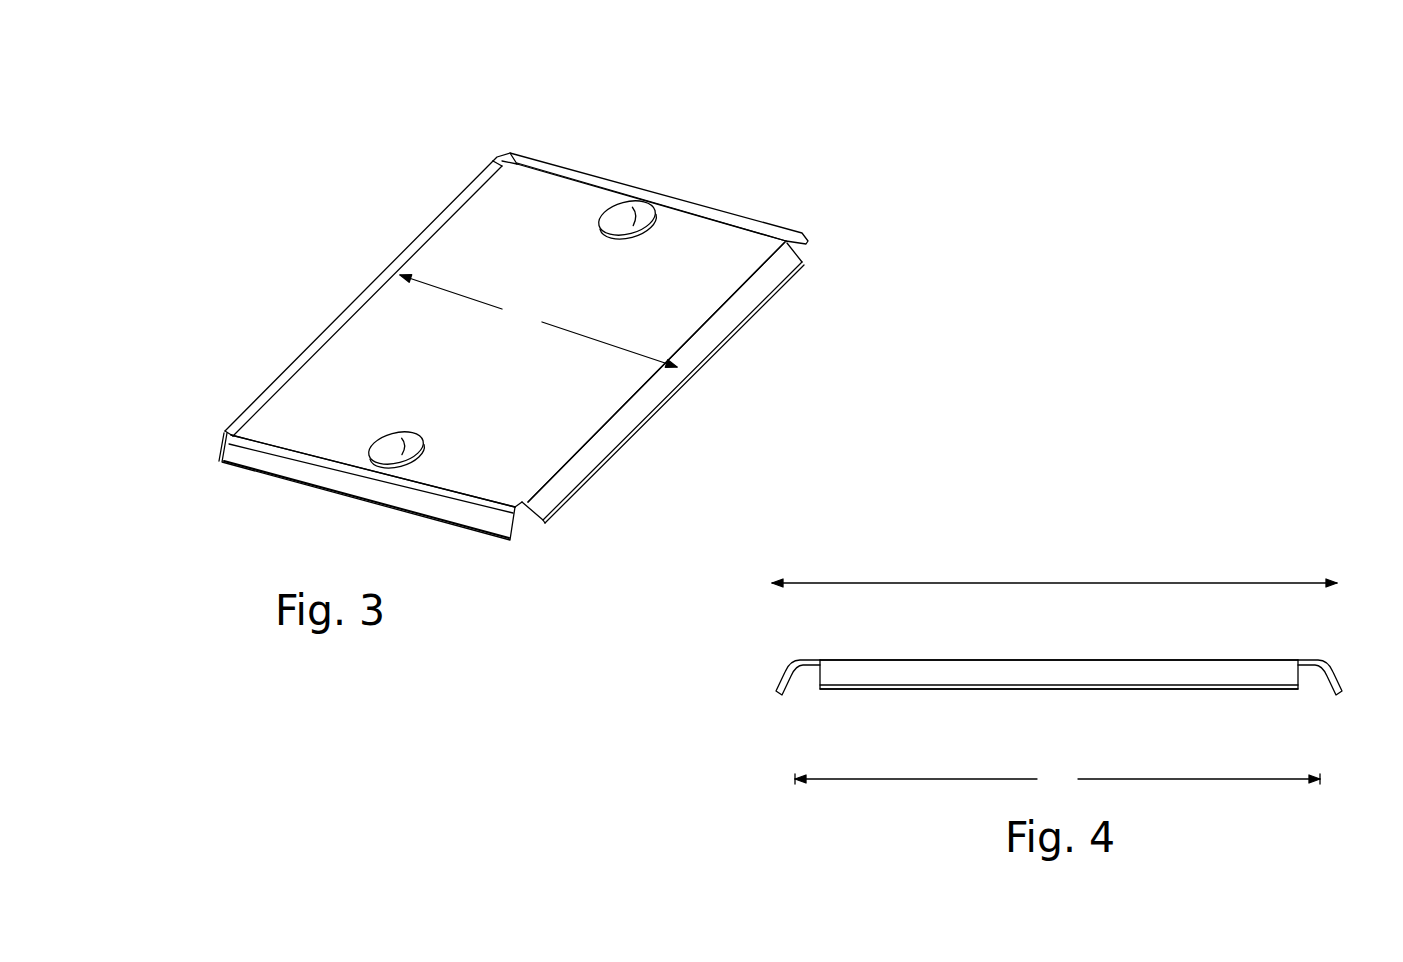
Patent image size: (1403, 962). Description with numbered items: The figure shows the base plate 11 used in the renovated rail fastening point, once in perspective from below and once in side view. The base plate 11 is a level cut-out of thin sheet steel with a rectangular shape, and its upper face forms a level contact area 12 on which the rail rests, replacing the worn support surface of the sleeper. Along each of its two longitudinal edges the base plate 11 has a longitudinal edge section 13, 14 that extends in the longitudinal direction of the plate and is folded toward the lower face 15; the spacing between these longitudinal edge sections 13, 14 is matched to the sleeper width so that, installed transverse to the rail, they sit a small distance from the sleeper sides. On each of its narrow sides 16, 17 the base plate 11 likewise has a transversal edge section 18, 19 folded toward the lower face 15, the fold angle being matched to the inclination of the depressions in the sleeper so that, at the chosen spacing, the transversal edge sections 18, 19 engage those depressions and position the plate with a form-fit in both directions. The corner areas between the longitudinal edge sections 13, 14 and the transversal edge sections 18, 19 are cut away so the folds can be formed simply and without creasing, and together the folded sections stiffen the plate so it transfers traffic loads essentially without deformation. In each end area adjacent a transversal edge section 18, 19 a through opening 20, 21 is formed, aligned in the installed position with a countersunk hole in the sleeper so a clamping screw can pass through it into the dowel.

In FIG. 3, the base plate 11 is at (447, 153).
In FIG. 4, the base plate 11 is at (1205, 705).
In FIG. 4, the contact area 12 is at (1165, 655).
In FIG. 3, the longitudinal edge section 13 is at (400, 267).
In FIG. 4, the longitudinal edge section 13 is at (993, 673).
In FIG. 3, the longitudinal edge section 14 is at (695, 360).
In FIG. 3, the lower face 15 is at (575, 365).
In FIG. 3, the narrow side 16 is at (297, 498).
In FIG. 3, the narrow side 17 is at (650, 183).
In FIG. 3, the transversal edge section 18 is at (430, 508).
In FIG. 4, the transversal edge section 18 is at (777, 685).
In FIG. 3, the transversal edge section 19 is at (727, 212).
In FIG. 4, the transversal edge section 19 is at (1337, 675).
In FIG. 3, the through opening 20 is at (373, 450).
In FIG. 3, the through opening 21 is at (625, 225).